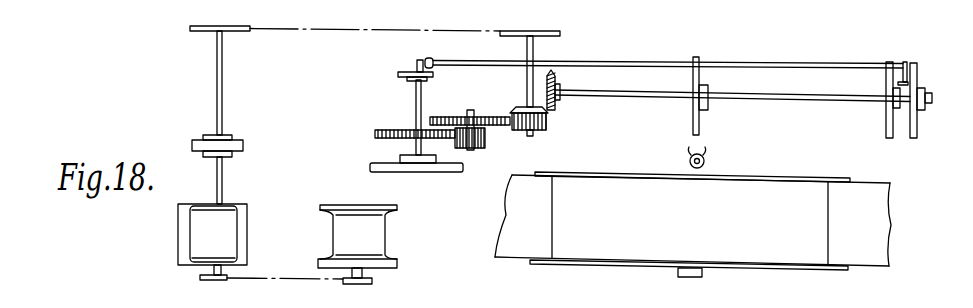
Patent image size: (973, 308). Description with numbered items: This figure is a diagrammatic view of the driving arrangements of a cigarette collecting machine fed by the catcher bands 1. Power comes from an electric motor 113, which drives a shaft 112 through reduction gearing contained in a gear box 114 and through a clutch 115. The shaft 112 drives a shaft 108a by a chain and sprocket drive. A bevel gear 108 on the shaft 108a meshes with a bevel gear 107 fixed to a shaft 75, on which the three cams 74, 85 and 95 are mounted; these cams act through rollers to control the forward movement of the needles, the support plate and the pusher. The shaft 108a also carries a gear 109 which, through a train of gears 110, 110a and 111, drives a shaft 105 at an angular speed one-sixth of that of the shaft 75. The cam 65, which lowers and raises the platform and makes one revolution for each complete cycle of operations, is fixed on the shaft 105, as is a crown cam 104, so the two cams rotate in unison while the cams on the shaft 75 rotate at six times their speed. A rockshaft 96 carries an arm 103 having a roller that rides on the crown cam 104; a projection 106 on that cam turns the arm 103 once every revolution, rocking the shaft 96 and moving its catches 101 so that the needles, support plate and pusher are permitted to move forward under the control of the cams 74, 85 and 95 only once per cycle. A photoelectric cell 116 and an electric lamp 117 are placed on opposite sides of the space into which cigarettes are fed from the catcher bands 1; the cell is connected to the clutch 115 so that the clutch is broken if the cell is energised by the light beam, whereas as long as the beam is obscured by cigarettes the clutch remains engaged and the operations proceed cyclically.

The catcher band 1 is at (872, 230).
The cam 65 is at (372, 166).
The cam 74 is at (886, 134).
The shaft 75 is at (808, 103).
The cam 85 is at (914, 137).
The cam 95 is at (693, 58).
The upper shaft 96 is at (817, 66).
The catch 101 is at (913, 83).
The arm 103 is at (434, 66).
The crown cam 104 is at (400, 74).
The shaft 105 is at (416, 98).
The projection 106 is at (418, 63).
The bevel gear 107 is at (558, 78).
The bevel gear 108 is at (513, 110).
The shaft 108a is at (538, 52).
The gear 109 is at (548, 130).
The gear 110 is at (488, 118).
The gear 110a is at (482, 140).
The gear 111 is at (376, 132).
The shaft 112 is at (217, 79).
The electric motor 113 is at (346, 228).
The gear box 114 is at (203, 220).
The clutch 115 is at (192, 144).
The photoelectric cell 116 is at (680, 277).
The electric lamp 117 is at (708, 157).